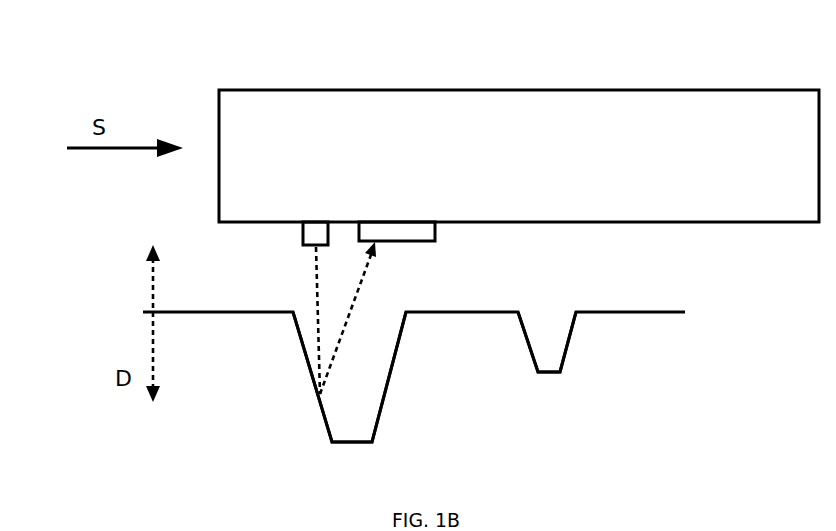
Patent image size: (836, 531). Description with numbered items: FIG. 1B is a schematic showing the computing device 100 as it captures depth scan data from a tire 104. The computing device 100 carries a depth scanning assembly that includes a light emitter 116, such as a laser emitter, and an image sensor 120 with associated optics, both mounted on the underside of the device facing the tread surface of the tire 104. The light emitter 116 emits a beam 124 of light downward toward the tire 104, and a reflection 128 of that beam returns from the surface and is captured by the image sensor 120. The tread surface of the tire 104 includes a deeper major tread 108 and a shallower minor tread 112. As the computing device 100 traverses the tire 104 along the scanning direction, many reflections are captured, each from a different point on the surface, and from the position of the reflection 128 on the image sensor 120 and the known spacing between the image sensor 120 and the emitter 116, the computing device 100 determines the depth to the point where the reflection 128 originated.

The computing device 100 is at (746, 82).
The tire 104 is at (132, 305).
The major treads 108 is at (362, 445).
The minor treads 112 is at (548, 373).
The light emitter 116 is at (303, 232).
The image sensor 120 is at (435, 230).
The beam 124 is at (316, 280).
The reflection 128 is at (343, 340).